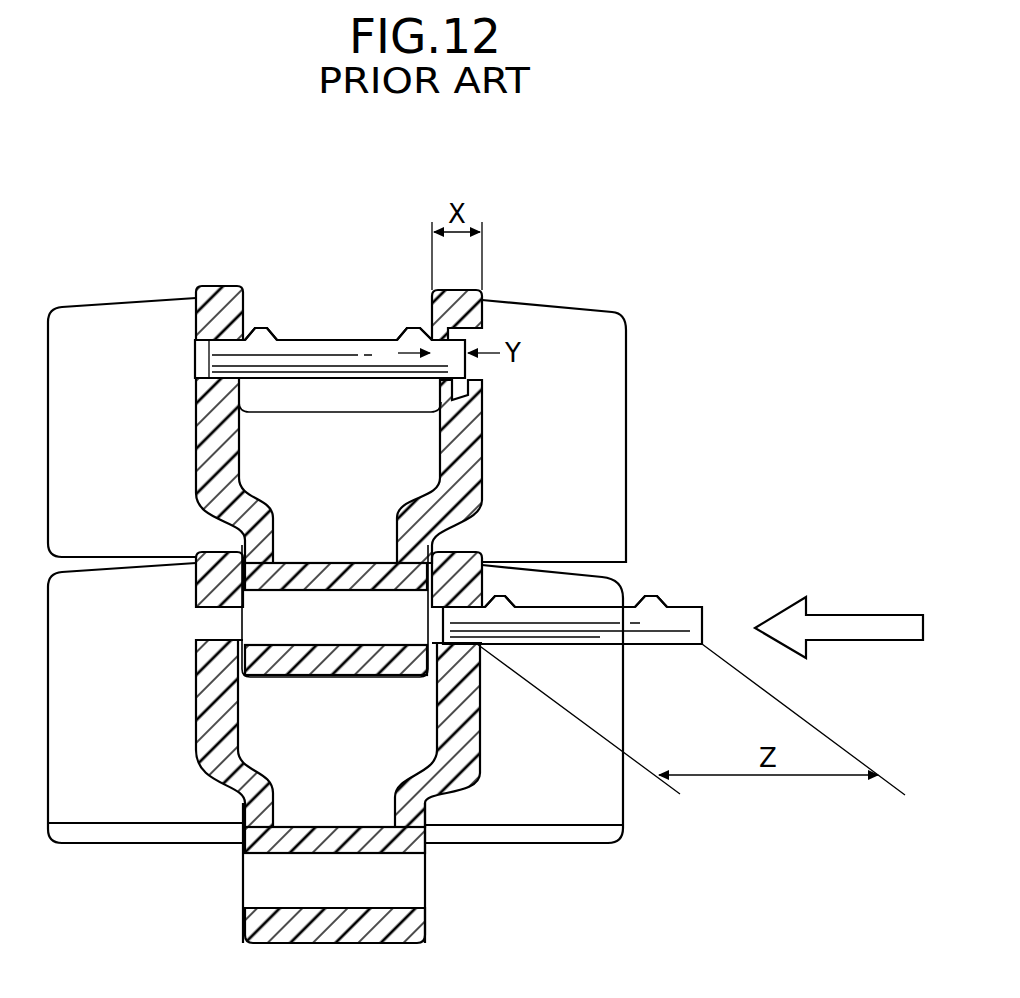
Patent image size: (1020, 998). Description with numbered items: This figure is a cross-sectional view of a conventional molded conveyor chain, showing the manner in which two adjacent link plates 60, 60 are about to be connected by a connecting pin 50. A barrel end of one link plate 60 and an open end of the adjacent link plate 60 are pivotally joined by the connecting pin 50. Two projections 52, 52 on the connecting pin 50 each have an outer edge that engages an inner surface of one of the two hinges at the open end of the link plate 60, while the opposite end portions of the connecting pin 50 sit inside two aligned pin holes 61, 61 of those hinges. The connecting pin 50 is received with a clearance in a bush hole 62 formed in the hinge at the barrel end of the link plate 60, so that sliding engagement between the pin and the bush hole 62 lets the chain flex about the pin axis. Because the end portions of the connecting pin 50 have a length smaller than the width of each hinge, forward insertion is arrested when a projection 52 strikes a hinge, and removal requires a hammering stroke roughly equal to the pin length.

The connecting pin 50 is at (345, 323).
The projection 52 is at (257, 328).
The link plate 60 is at (124, 294).
The pin hole 61 is at (200, 625).
The bush hole 62 is at (283, 636).